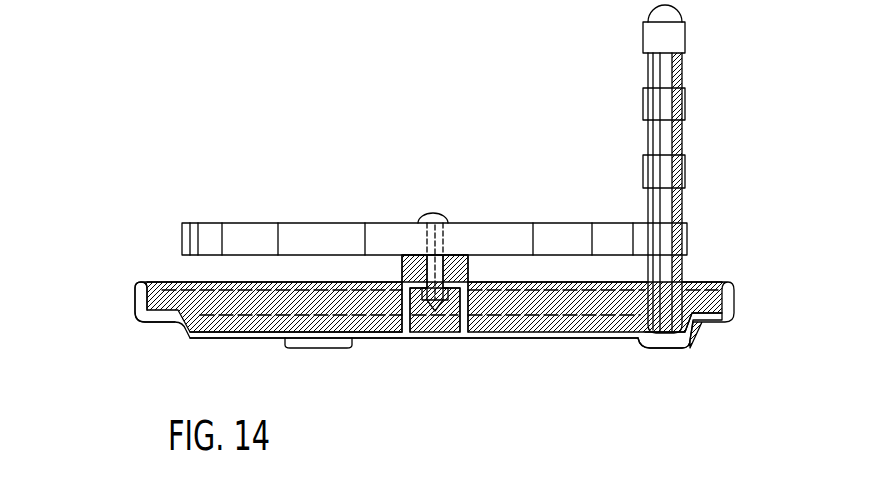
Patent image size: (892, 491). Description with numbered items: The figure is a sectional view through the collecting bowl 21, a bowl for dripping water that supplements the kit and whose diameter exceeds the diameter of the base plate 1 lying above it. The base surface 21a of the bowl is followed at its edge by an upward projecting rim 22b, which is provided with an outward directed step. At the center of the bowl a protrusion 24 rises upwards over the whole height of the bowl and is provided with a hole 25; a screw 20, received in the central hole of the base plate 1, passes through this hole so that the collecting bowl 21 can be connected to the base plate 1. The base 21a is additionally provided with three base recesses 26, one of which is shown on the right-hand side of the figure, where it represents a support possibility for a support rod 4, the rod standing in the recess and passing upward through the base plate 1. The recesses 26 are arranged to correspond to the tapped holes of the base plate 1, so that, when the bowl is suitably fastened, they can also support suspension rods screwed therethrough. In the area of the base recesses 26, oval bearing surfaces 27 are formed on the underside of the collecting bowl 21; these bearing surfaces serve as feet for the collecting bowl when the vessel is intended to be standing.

The base plate 1 is at (252, 233).
The support rod 4 is at (678, 72).
The screw 20 is at (447, 218).
The collecting bowl 21 is at (522, 347).
The base surface 21a is at (225, 342).
The upward projecting rim 22b is at (138, 297).
The protrusion 24 is at (468, 268).
The hole 25 is at (445, 256).
The base recess 26 is at (664, 335).
The oval bearing surface 27 is at (344, 346).